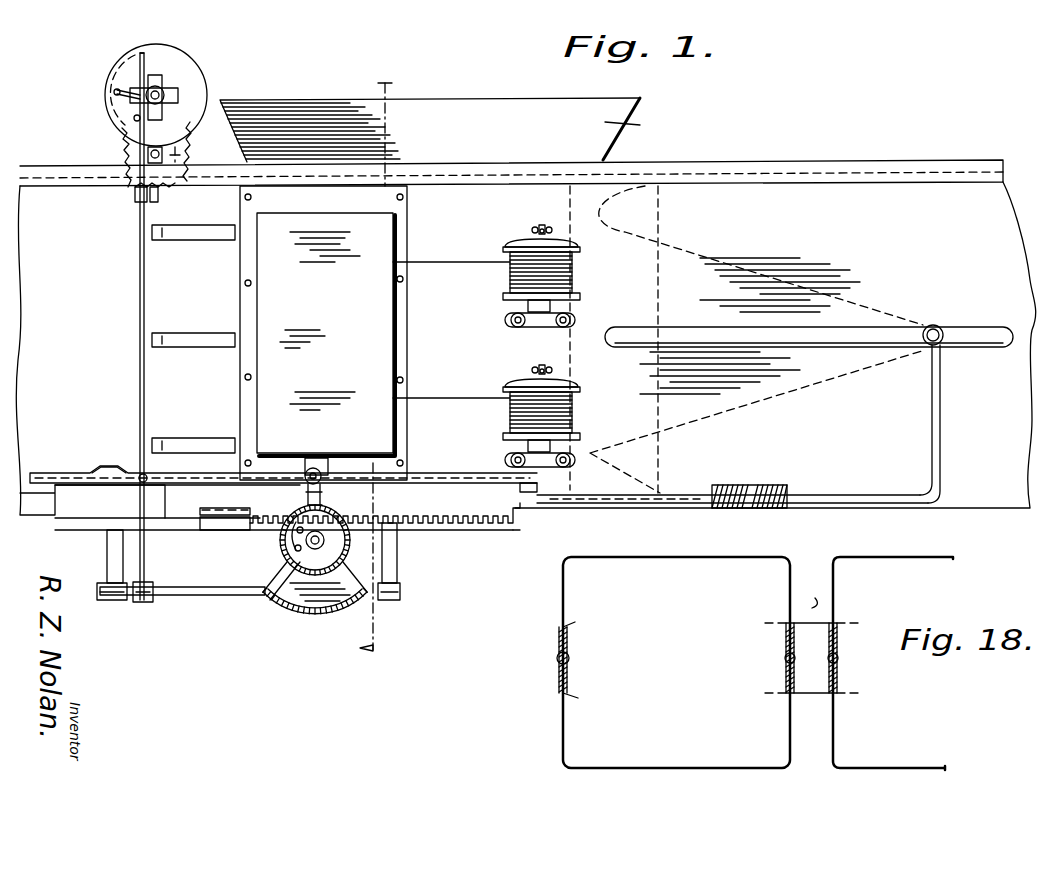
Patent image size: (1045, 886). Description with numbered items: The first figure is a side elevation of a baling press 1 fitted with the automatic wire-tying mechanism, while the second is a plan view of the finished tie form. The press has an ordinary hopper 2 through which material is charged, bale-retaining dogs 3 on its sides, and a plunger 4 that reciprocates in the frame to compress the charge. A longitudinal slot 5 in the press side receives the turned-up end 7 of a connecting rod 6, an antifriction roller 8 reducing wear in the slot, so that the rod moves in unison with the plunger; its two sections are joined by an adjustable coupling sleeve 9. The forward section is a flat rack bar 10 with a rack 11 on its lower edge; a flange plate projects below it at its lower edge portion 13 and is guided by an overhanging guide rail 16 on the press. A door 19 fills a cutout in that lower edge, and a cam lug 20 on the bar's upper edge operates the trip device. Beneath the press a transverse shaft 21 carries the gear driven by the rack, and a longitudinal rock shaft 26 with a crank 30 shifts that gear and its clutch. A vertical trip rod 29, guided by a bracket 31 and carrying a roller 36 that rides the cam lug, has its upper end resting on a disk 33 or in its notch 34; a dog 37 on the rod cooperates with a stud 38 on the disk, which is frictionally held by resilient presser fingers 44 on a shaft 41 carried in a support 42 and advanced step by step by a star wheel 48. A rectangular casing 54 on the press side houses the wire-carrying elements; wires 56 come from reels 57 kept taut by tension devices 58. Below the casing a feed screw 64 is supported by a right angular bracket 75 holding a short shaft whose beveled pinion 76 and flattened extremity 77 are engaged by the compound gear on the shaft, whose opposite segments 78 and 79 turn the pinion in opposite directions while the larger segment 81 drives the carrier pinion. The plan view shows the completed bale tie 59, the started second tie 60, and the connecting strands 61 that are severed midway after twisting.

In FIG. 1, the baling press 1 is at (525, 314).
In FIG. 1, the hopper 2 is at (506, 367).
In FIG. 1, the dogs 3 is at (215, 232).
In FIG. 1, the plunger 4 is at (620, 327).
In FIG. 1, the longitudinal slot 5 is at (845, 327).
In FIG. 1, the connecting rod 6 is at (855, 495).
In FIG. 1, the turned-up end of connecting rod 7 is at (942, 440).
In FIG. 1, the antifriction roller 8 is at (943, 327).
In FIG. 1, the coupling sleeve 9 is at (750, 485).
In FIG. 1, the rack bar 10 is at (82, 510).
In FIG. 1, the rack 11 is at (455, 528).
In FIG. 1, the lower edge portion of flange plate 13 is at (172, 530).
In FIG. 1, the guide rail 16 is at (70, 470).
In FIG. 1, the door 19 is at (224, 520).
In FIG. 1, the cam lug 20 is at (110, 462).
In FIG. 1, the shaft 21 is at (316, 542).
In FIG. 1, the rock shaft 26 is at (210, 597).
In FIG. 1, the trip rod 29 is at (138, 393).
In FIG. 1, the crank 30 is at (148, 605).
In FIG. 1, the bracket 31 is at (135, 200).
In FIG. 1, the disk 33 is at (118, 118).
In FIG. 1, the notch 34 is at (140, 57).
In FIG. 1, the roller or sleeve 36 is at (150, 480).
In FIG. 1, the dog 37 is at (135, 107).
In FIG. 1, the stud or pin 38 is at (114, 91).
In FIG. 1, the shaft 41 is at (205, 133).
In FIG. 1, the support 42 is at (180, 148).
In FIG. 1, the resilient presser fingers 44 is at (162, 95).
In FIG. 1, the star wheel 48 is at (124, 152).
In FIG. 1, the lateral casing 54 is at (323, 333).
In FIG. 1, the wires 56 is at (468, 245).
In FIG. 1, the reel or drum 57 is at (553, 346).
In FIG. 1, the tension device 58 is at (535, 238).
In FIG. 1, the worm shaft or feed screw 64 is at (314, 466).
In FIG. 1, the right angular bracket 75 is at (306, 492).
In FIG. 1, the beveled pinion 76 is at (322, 508).
In FIG. 1, the flattened extremity 77 is at (294, 546).
In FIG. 1, the segment 78 is at (390, 553).
In FIG. 1, the segment 79 is at (290, 575).
In FIG. 1, the larger segment 81 is at (312, 615).
In FIG. 18, the completed bale tie 59 is at (673, 662).
In FIG. 18, the second tie 60 is at (893, 663).
In FIG. 18, the strands 61 is at (800, 621).